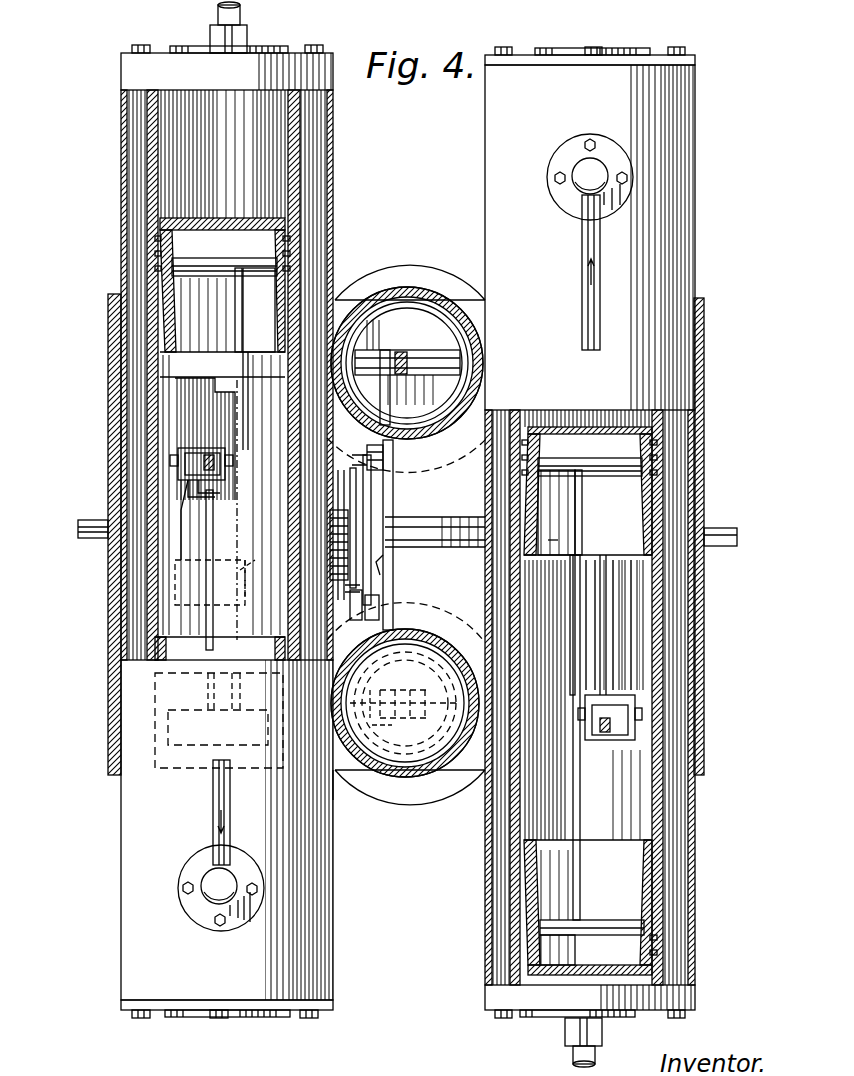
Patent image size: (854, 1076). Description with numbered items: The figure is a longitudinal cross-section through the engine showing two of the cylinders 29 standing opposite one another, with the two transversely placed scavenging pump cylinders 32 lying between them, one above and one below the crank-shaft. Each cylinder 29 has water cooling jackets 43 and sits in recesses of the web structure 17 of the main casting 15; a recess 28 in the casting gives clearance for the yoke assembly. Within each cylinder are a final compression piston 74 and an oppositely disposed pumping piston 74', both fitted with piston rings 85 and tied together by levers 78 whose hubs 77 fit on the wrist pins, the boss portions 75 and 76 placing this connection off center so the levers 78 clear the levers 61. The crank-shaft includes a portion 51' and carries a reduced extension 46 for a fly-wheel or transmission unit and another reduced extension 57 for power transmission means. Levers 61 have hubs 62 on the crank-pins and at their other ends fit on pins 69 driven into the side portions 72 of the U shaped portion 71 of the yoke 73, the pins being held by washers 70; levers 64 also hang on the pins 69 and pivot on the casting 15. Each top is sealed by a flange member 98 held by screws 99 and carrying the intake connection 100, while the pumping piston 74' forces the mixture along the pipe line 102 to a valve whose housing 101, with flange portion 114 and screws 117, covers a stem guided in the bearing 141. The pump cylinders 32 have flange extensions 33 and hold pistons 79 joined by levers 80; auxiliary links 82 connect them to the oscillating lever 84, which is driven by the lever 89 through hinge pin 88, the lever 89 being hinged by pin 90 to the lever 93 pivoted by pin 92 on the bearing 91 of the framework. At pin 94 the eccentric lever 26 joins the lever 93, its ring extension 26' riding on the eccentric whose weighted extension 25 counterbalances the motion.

The main casting 15 is at (108, 580).
The web structure 17 is at (342, 770).
The weighted extension 25 is at (345, 588).
The eccentric lever 26 is at (328, 528).
The circular ring extension 26' is at (324, 545).
The recess 28 is at (215, 400).
The cylinder 29 is at (333, 85).
The scavenging pump cylinder 32 is at (392, 290).
The flange extension 33 is at (408, 268).
The water cooling jacket 43 is at (150, 430).
The reduced extension 46 is at (737, 538).
The crank-shaft portion 51' is at (259, 571).
The reduced extension 57 is at (78, 529).
The lever 61 is at (215, 495).
The boss or hub 62 is at (210, 582).
The lever 64 is at (216, 460).
The pin 69 is at (233, 468).
The washer 70 is at (178, 460).
The U shaped portion 71 is at (412, 576).
The side portion 72 is at (630, 760).
The yoke 73 is at (213, 545).
The compression piston 74 is at (449, 544).
The pumping piston 74' is at (449, 580).
The boss portion 75 is at (200, 268).
The boss portion 76 is at (264, 280).
The hub 77 is at (236, 285).
The lever 78 is at (238, 420).
The piston 79 is at (432, 303).
The lever 80 is at (398, 355).
The auxiliary link member 82 is at (390, 385).
The oscillating lever 84 is at (403, 524).
The piston ring 85 is at (290, 237).
The hinge pin 88 is at (383, 453).
The lever 89 is at (393, 500).
The hinge pin 90 is at (365, 460).
The bearing 91 is at (379, 615).
The pin 92 is at (362, 600).
The lever 93 is at (372, 490).
The pin 94 is at (340, 472).
The flange member 98 is at (290, 52).
The screw 99 is at (155, 50).
The intake connection 100 is at (247, 30).
The valve housing 101 is at (215, 880).
The pipe line 102 is at (213, 805).
The flange portion 114 is at (178, 898).
The screw 117 is at (182, 888).
The bearing 141 is at (380, 567).